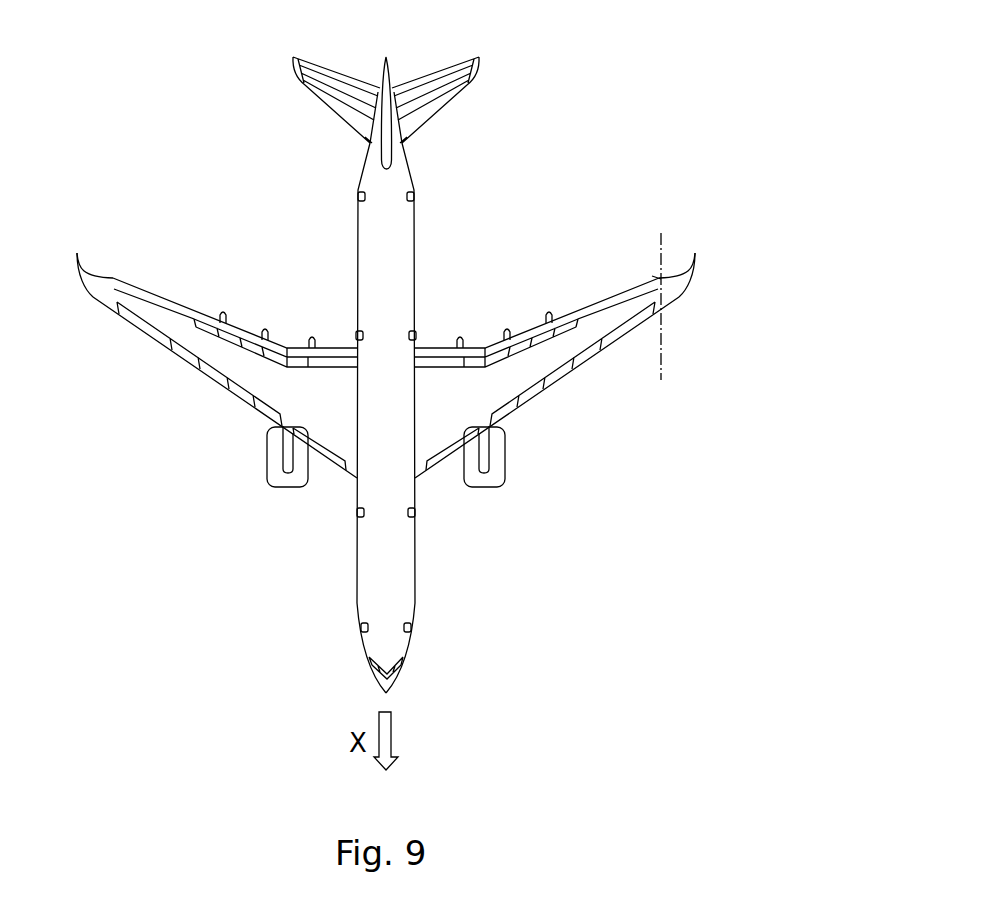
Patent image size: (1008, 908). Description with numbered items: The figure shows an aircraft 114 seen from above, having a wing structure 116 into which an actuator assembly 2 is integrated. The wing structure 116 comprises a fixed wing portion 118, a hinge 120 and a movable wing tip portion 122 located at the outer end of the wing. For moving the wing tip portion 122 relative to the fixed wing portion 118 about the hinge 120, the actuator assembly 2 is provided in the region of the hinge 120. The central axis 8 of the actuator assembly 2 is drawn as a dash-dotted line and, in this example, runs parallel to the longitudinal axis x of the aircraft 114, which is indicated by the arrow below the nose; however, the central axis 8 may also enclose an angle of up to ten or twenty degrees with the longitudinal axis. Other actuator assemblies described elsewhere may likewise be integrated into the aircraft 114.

The aircraft 114 is at (595, 103).
The wing structure 116 is at (559, 412).
The fixed wing portion 118 is at (545, 358).
The hinge 120 is at (645, 270).
The movable wing tip portion 122 is at (680, 278).
The actuator assembly 2 is at (672, 293).
The central axis 8 is at (661, 358).